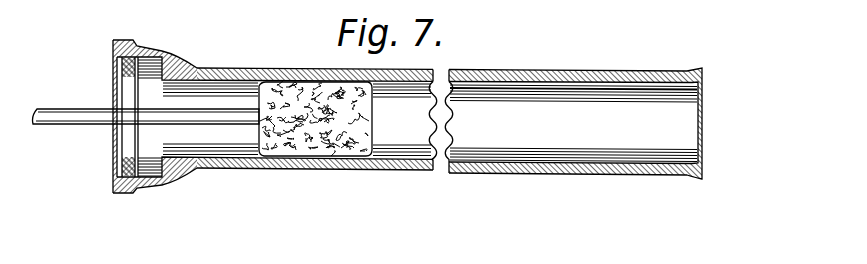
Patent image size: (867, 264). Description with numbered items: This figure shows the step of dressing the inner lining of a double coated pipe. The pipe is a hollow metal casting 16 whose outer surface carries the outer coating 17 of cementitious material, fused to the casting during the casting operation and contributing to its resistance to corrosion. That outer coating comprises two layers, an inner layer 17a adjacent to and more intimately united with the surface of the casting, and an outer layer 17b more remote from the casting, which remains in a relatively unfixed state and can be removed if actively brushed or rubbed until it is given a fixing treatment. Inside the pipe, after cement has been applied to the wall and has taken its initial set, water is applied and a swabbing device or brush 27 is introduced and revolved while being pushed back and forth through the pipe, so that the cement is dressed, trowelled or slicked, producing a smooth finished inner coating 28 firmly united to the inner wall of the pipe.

The hollow metal casting 16 is at (573, 127).
The outer coating 17 is at (275, 129).
The inner layer of outer coating 17a is at (323, 68).
The outer layer of outer coating 17b is at (250, 68).
The swabbing device or brush 27 is at (312, 157).
The smooth finished inner coating 28 is at (520, 84).